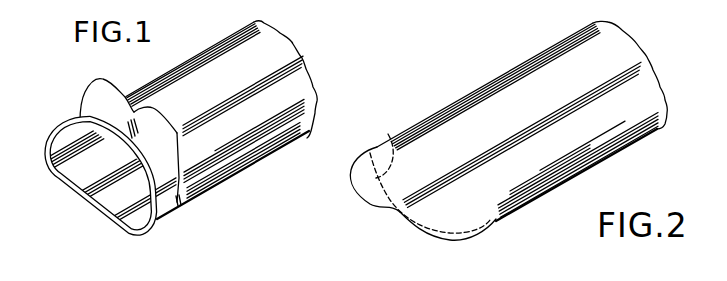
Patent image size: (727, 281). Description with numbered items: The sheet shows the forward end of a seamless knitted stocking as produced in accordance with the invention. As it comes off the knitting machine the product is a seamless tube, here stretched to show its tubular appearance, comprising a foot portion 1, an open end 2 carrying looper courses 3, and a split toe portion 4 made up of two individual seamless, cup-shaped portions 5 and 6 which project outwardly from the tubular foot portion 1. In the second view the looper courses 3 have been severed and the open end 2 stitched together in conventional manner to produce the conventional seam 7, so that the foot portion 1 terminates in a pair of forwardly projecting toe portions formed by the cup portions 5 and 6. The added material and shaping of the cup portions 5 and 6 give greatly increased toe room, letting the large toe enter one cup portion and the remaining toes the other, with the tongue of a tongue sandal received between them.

In FIG. 1, the foot portion 1 is at (238, 170).
In FIG. 2, the foot portion 1 is at (537, 56).
In FIG. 1, the open end 2 is at (182, 206).
In FIG. 1, the looper courses 3 is at (86, 118).
In FIG. 1, the split toe portion 4 is at (121, 129).
In FIG. 1, the cup-shaped portion 5 is at (104, 86).
In FIG. 2, the cup-shaped portion 5 is at (353, 176).
In FIG. 1, the cup-shaped portion 6 is at (162, 125).
In FIG. 2, the cup-shaped portion 6 is at (424, 233).
In FIG. 2, the seam 7 is at (390, 141).